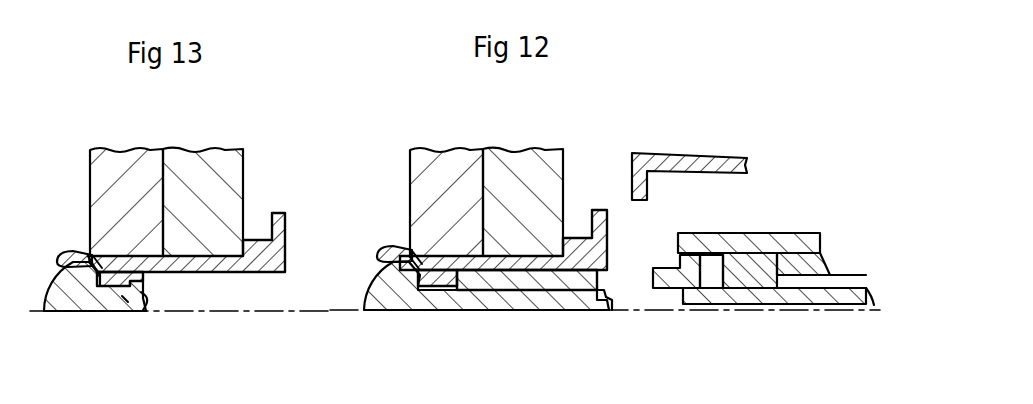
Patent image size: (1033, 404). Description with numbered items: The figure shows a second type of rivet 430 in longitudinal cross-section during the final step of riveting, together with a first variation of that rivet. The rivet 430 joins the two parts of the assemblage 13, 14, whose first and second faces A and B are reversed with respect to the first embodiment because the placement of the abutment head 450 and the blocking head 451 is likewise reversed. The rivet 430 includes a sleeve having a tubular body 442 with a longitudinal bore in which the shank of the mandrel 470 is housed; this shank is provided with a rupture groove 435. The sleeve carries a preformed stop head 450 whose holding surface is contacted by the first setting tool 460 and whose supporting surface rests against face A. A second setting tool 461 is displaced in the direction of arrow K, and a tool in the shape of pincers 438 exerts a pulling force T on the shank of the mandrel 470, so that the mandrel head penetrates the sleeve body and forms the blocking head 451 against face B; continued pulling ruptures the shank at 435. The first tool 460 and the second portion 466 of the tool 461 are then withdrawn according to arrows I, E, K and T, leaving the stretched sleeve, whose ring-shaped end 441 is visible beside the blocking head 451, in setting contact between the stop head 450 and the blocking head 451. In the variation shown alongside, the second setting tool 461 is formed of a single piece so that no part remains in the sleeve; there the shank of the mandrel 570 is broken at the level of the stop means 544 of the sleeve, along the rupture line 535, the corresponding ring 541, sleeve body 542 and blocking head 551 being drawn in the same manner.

In FIG. 13, the assemblage part 13 is at (123, 165).
In FIG. 12, the assemblage part 13 is at (443, 163).
In FIG. 13, the assemblage part 14 is at (203, 160).
In FIG. 12, the assemblage part 14 is at (523, 158).
In FIG. 13, the ring 541 is at (81, 250).
In FIG. 13, the base plate 542 is at (213, 274).
In FIG. 13, the stop means 544 is at (137, 278).
In FIG. 13, the rupture line 535 is at (147, 303).
In FIG. 13, the body 551 is at (48, 333).
In FIG. 13, the shank of the mandrel 570 is at (127, 302).
In FIG. 12, the ring 441 is at (401, 247).
In FIG. 12, the tubular body 442 is at (520, 270).
In FIG. 12, the abutment head 450 is at (587, 196).
In FIG. 12, the blocking head 451 is at (350, 260).
In FIG. 12, the first setting tool 460 is at (707, 163).
In FIG. 12, the second setting tool 461 is at (750, 229).
In FIG. 12, the rivet 430 is at (460, 334).
In FIG. 12, the shank of the mandrel 470 is at (483, 304).
In FIG. 12, the layer 466 is at (573, 276).
In FIG. 12, the rupture groove 435 is at (613, 309).
In FIG. 12, the tool in the shape of pincers 438 is at (753, 291).